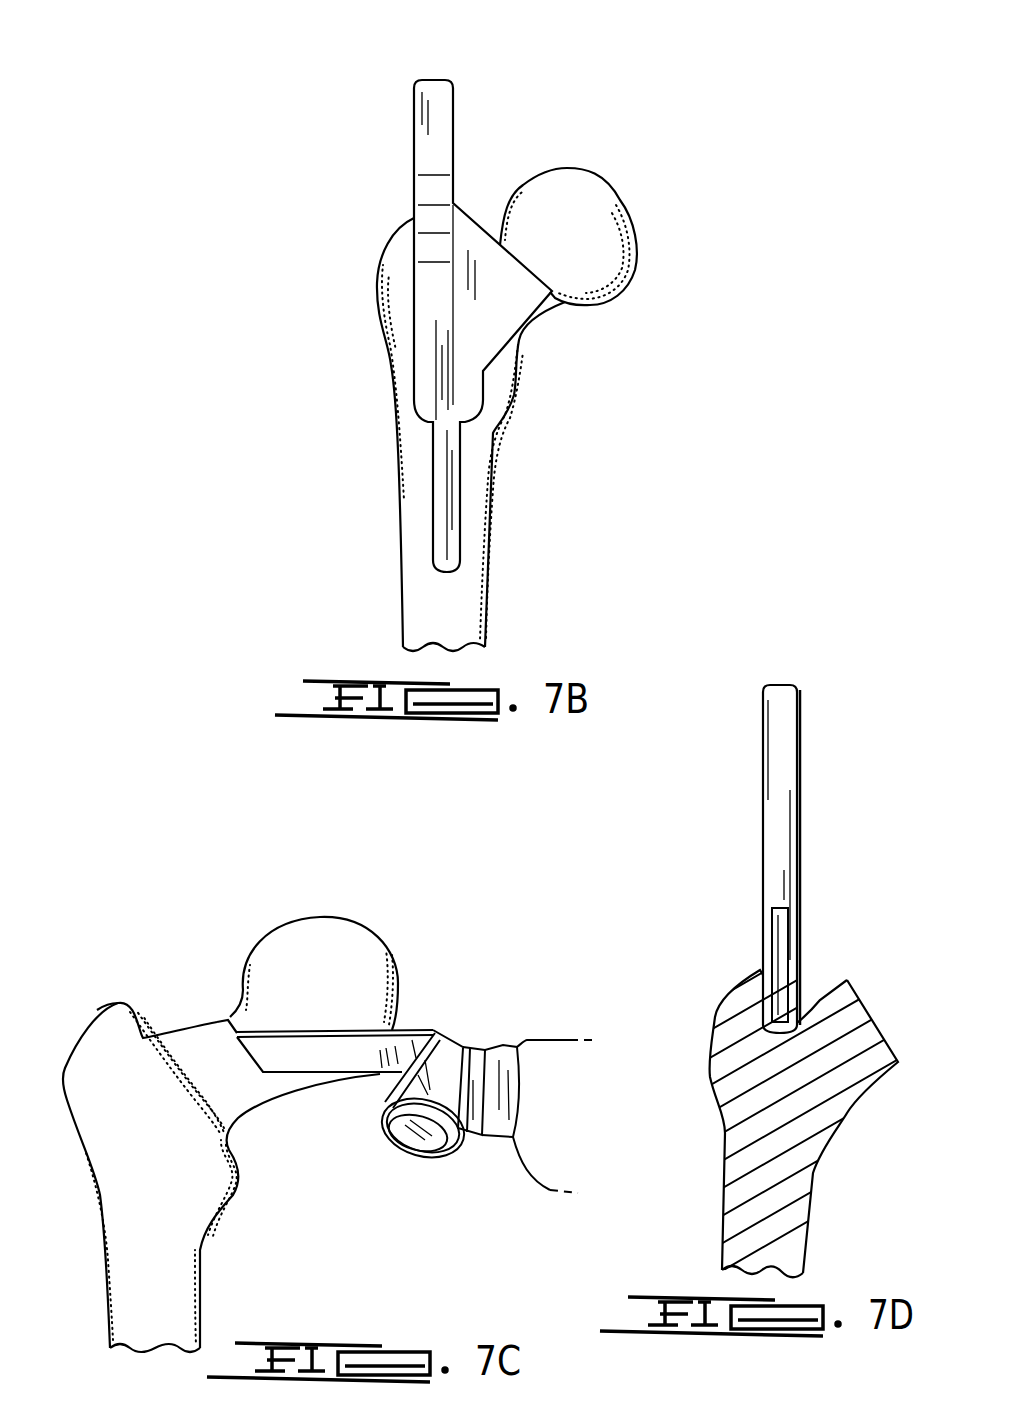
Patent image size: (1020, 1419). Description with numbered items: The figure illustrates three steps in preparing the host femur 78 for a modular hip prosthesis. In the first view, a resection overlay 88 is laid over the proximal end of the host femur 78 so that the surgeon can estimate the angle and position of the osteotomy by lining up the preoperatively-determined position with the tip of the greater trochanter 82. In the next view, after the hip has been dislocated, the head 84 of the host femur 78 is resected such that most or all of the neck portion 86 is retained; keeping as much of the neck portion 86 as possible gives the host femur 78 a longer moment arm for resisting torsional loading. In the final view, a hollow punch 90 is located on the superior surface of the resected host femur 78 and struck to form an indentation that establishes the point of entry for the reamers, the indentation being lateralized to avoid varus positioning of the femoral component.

In FIG. 7B, the host femur 78 is at (377, 283).
In FIG. 7C, the host femur 78 is at (192, 1210).
In FIG. 7D, the host femur 78 is at (818, 1115).
In FIG. 7C, the greater trochanter 82 is at (112, 1006).
In FIG. 7B, the head 84 is at (612, 224).
In FIG. 7C, the head 84 is at (303, 943).
In FIG. 7C, the neck portion 86 is at (202, 1043).
In FIG. 7D, the neck portion 86 is at (866, 1027).
In FIG. 7B, the resection overlay 88 is at (433, 332).
In FIG. 7D, the hollow punch 90 is at (784, 733).